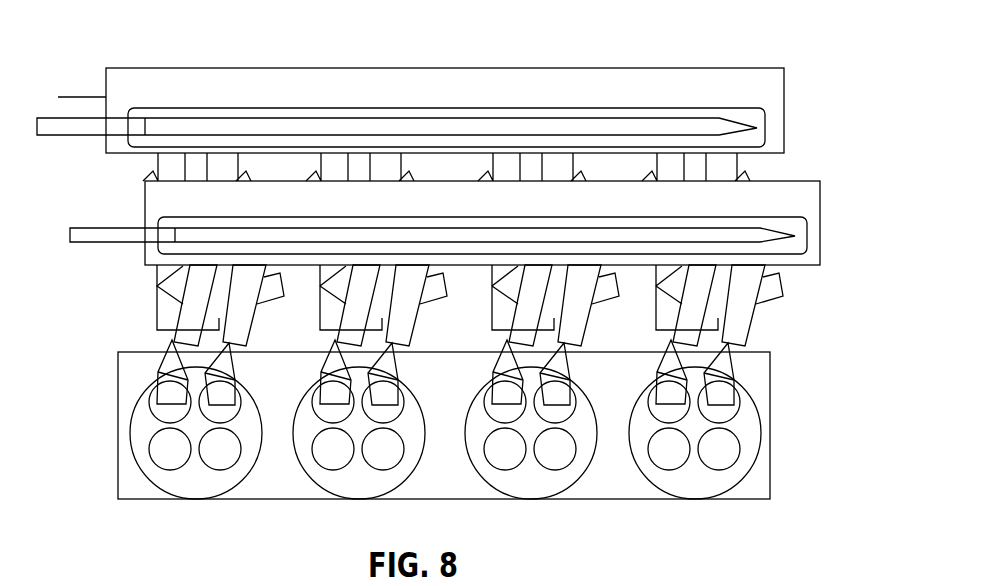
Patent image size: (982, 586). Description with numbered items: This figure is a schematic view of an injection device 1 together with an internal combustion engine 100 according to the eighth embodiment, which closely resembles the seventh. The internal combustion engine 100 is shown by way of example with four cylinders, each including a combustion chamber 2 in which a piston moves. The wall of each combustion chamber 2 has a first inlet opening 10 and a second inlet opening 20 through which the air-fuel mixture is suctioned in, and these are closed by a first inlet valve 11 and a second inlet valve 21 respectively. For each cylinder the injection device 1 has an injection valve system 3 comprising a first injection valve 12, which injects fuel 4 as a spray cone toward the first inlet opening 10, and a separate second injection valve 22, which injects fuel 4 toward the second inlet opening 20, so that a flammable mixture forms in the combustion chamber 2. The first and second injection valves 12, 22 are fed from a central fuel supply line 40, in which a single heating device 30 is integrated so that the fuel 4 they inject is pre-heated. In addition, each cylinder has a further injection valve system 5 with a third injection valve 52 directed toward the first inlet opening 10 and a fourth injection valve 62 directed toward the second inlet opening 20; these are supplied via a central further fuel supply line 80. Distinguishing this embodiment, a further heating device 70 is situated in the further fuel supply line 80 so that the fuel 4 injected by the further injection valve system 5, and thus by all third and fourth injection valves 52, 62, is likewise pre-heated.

The injection device 1 is at (429, 90).
The combustion chamber 2 is at (142, 472).
The injection valve system 3 is at (180, 325).
The fuel 4 is at (223, 370).
The further injection valve system 5 is at (132, 305).
The first inlet opening 10 is at (119, 402).
The first inlet valve 11 is at (165, 413).
The first injection valve 12 is at (147, 316).
The second inlet opening 20 is at (248, 464).
The second inlet valve 21 is at (227, 412).
The second injection valve 22 is at (218, 308).
The heating device 30 is at (292, 115).
The fuel supply line 40 is at (233, 78).
The third injection valve 52 is at (187, 315).
The fourth injection valve 62 is at (163, 317).
The further heating device 70 is at (788, 222).
The further fuel supply line 80 is at (815, 188).
The internal combustion engine 100 is at (776, 382).